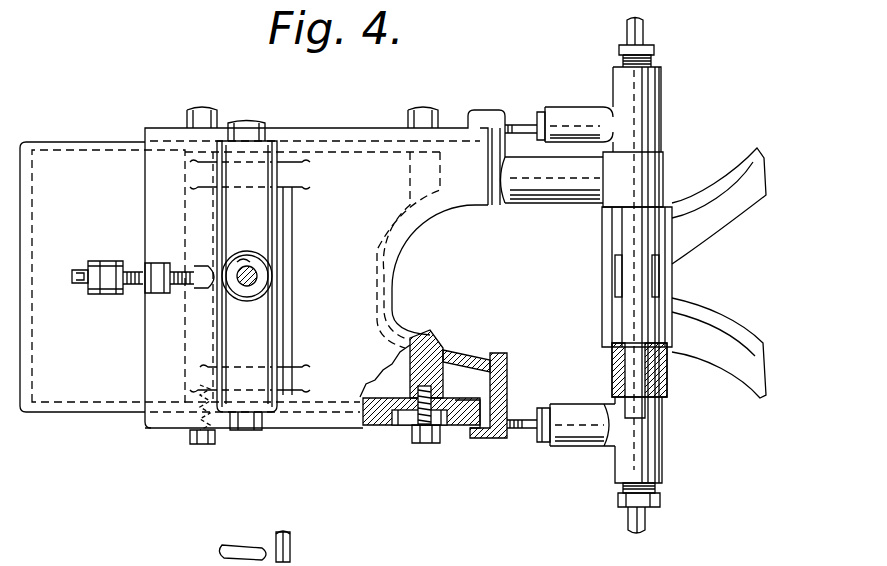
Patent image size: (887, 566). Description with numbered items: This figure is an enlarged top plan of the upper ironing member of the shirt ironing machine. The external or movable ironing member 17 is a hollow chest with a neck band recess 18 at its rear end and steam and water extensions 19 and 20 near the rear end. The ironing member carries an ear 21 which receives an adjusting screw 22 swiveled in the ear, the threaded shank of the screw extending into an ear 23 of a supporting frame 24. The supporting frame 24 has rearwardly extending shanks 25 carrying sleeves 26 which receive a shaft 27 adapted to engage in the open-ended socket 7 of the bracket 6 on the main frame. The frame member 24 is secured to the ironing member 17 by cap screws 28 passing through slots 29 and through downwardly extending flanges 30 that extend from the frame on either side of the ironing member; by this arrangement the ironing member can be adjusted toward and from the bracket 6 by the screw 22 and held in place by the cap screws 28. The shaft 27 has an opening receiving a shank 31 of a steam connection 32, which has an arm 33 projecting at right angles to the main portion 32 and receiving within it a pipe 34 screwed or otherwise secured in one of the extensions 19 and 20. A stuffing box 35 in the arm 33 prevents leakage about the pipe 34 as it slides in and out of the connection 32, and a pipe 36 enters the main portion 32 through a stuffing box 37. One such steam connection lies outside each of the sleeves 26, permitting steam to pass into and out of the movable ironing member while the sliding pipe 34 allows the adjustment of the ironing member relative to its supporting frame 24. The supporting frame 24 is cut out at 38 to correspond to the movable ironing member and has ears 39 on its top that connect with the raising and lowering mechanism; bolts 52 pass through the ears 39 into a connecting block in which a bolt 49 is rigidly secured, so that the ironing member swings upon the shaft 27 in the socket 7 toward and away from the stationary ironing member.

The bracket 6 is at (712, 244).
The open-ended bearings 7 is at (612, 256).
The external ironing member 17 is at (89, 160).
The neck band recess 18 is at (446, 350).
The steam and water extension 19 is at (482, 436).
The steam and water extension 20 is at (488, 120).
The ear 21 is at (96, 295).
The adjusting screw 22 is at (132, 292).
The ear 23 is at (160, 276).
The supporting frame 24 is at (350, 165).
The rearwardly extending shanks 25 is at (548, 195).
The sleeves 26 is at (664, 186).
The shaft 27 is at (668, 366).
The cap screws 28 is at (202, 444).
The slots 29 is at (415, 428).
The downwardly extending flanges 30 is at (375, 428).
The shank 31 is at (656, 400).
The steam connection 32 is at (663, 456).
The arm 33 is at (590, 432).
The pipe 34 is at (522, 430).
The stuffing box 35 is at (545, 444).
The pipe 36 is at (630, 520).
The stuffing box 37 is at (624, 501).
The cut out 38 is at (405, 312).
The ears 39 is at (290, 175).
The bolt 49 is at (262, 278).
The bolts 52 is at (250, 422).